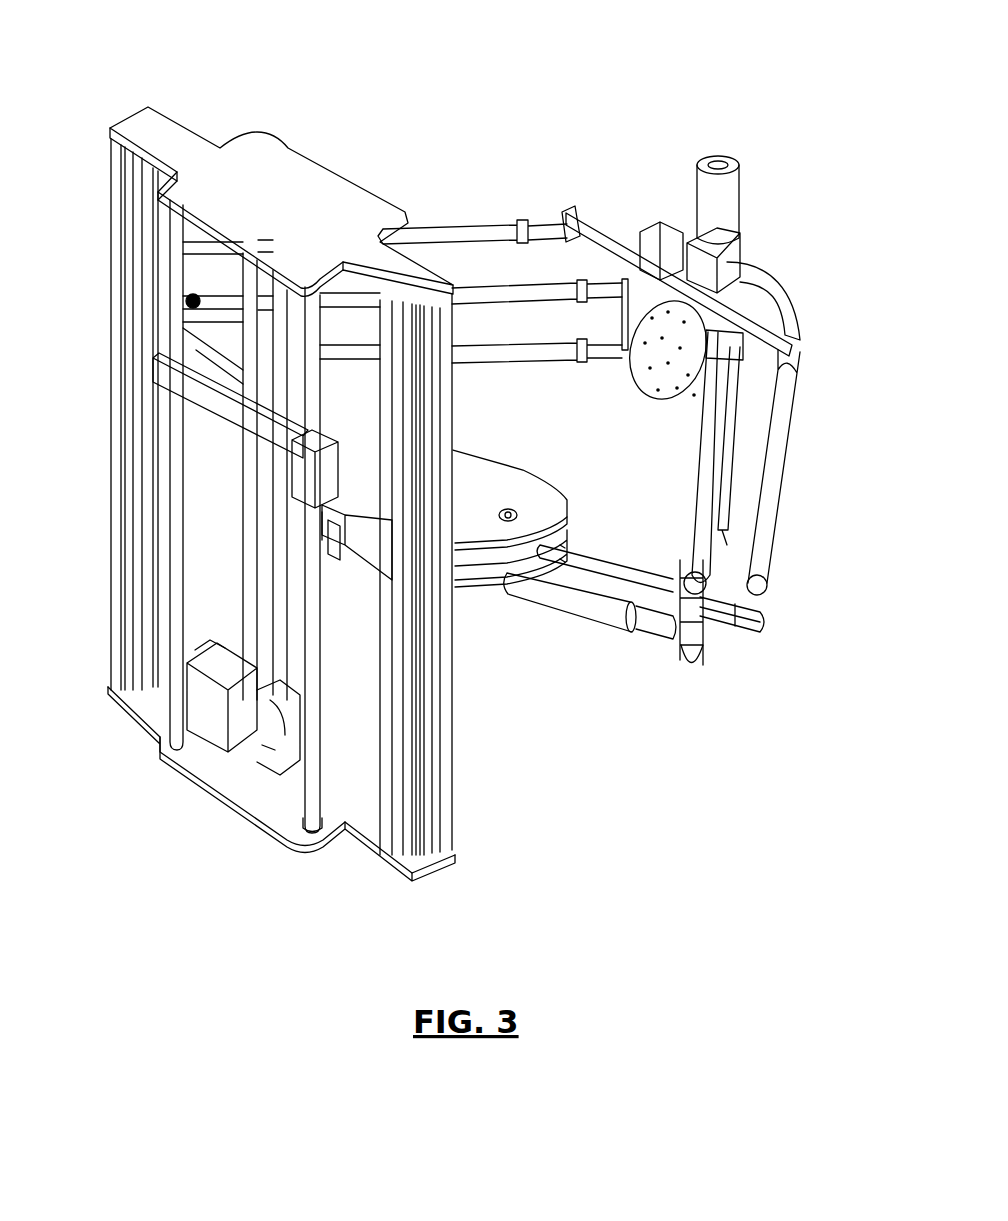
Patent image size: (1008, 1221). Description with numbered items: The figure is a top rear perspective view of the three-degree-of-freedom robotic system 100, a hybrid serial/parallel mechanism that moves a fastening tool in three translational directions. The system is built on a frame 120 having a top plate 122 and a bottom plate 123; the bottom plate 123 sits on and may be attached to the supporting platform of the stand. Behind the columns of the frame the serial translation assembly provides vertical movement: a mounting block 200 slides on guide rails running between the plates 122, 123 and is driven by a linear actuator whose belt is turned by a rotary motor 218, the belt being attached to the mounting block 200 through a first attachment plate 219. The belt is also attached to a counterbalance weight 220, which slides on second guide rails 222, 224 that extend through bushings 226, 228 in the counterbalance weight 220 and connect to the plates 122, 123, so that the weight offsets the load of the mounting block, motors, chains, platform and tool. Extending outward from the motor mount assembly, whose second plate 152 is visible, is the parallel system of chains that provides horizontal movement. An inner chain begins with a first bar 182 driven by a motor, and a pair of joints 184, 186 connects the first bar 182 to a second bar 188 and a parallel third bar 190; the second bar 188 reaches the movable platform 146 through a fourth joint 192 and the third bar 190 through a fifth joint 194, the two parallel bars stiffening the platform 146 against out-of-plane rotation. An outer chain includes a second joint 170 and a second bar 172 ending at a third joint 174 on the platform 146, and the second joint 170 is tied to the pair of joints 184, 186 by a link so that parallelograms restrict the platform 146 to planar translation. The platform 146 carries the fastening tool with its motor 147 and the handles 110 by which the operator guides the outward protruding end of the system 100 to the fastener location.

The 3-DOF robotic system 100 is at (180, 58).
The handles 110 is at (777, 297).
The frame 120 is at (115, 620).
The top plate 122 is at (290, 197).
The bottom plate 123 is at (265, 825).
The movable platform 146 is at (573, 222).
The motor of the fastening tool 147 is at (727, 213).
The second plate 152 is at (483, 600).
The second joint 170 is at (758, 630).
The second bar 172 is at (773, 515).
The third joint 174 is at (790, 347).
The first bar 182 is at (587, 617).
The second joint 184 is at (697, 620).
The third joint 186 is at (690, 657).
The second bar 188 is at (700, 550).
The third bar 190 is at (730, 472).
The fourth joint 192 is at (607, 286).
The fifth joint 194 is at (605, 342).
The mounting block 200 is at (370, 552).
The rotary motor 218 is at (212, 702).
The first attachment plate 219 is at (335, 533).
The counterbalance weight 220 is at (170, 400).
The second guide rail 222 is at (313, 827).
The second guide rail 224 is at (173, 720).
The bushing 226 is at (295, 443).
The bushing 228 is at (170, 365).